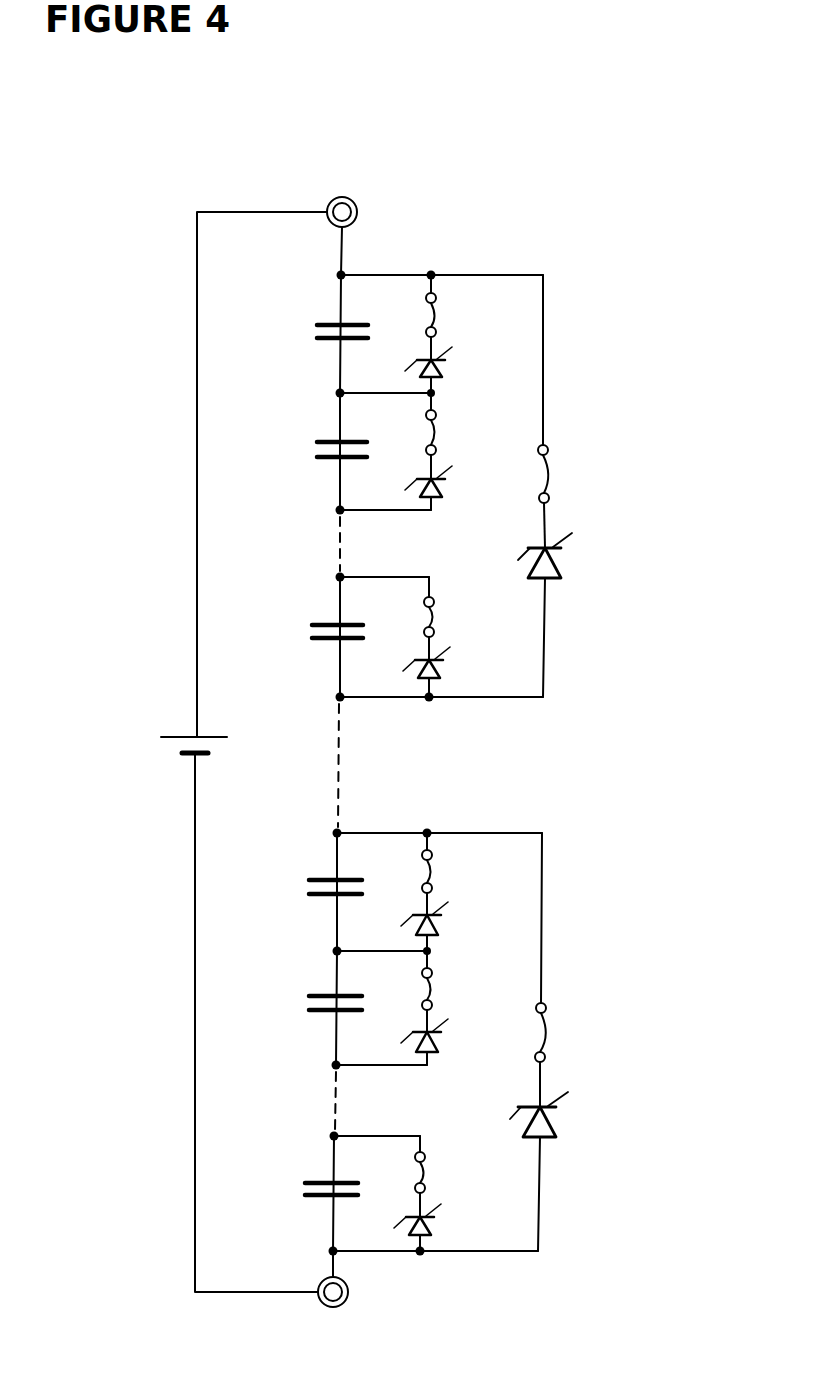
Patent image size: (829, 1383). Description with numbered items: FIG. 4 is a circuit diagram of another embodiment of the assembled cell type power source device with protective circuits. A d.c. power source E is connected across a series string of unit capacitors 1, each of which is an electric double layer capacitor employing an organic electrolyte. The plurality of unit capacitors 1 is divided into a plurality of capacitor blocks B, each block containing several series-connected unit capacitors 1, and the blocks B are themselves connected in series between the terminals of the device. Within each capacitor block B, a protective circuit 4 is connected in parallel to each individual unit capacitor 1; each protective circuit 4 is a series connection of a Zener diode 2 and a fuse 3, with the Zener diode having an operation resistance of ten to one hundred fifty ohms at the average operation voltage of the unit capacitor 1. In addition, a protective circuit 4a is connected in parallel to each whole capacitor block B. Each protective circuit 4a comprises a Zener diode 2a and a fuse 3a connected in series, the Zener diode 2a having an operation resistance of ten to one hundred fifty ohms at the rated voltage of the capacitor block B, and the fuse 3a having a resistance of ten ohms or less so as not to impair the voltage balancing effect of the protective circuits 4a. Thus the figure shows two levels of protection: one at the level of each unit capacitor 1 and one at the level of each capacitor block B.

The unit capacitor 1 is at (267, 1197).
The Zener diode 2 is at (445, 366).
The fuse 3 is at (435, 312).
The protective circuit 4 is at (482, 292).
The Zener diode 2a is at (558, 563).
The fuse 3a is at (550, 463).
The protective circuit 4a is at (642, 425).
The capacitor block B is at (268, 306).
The d.c. power source E is at (173, 748).